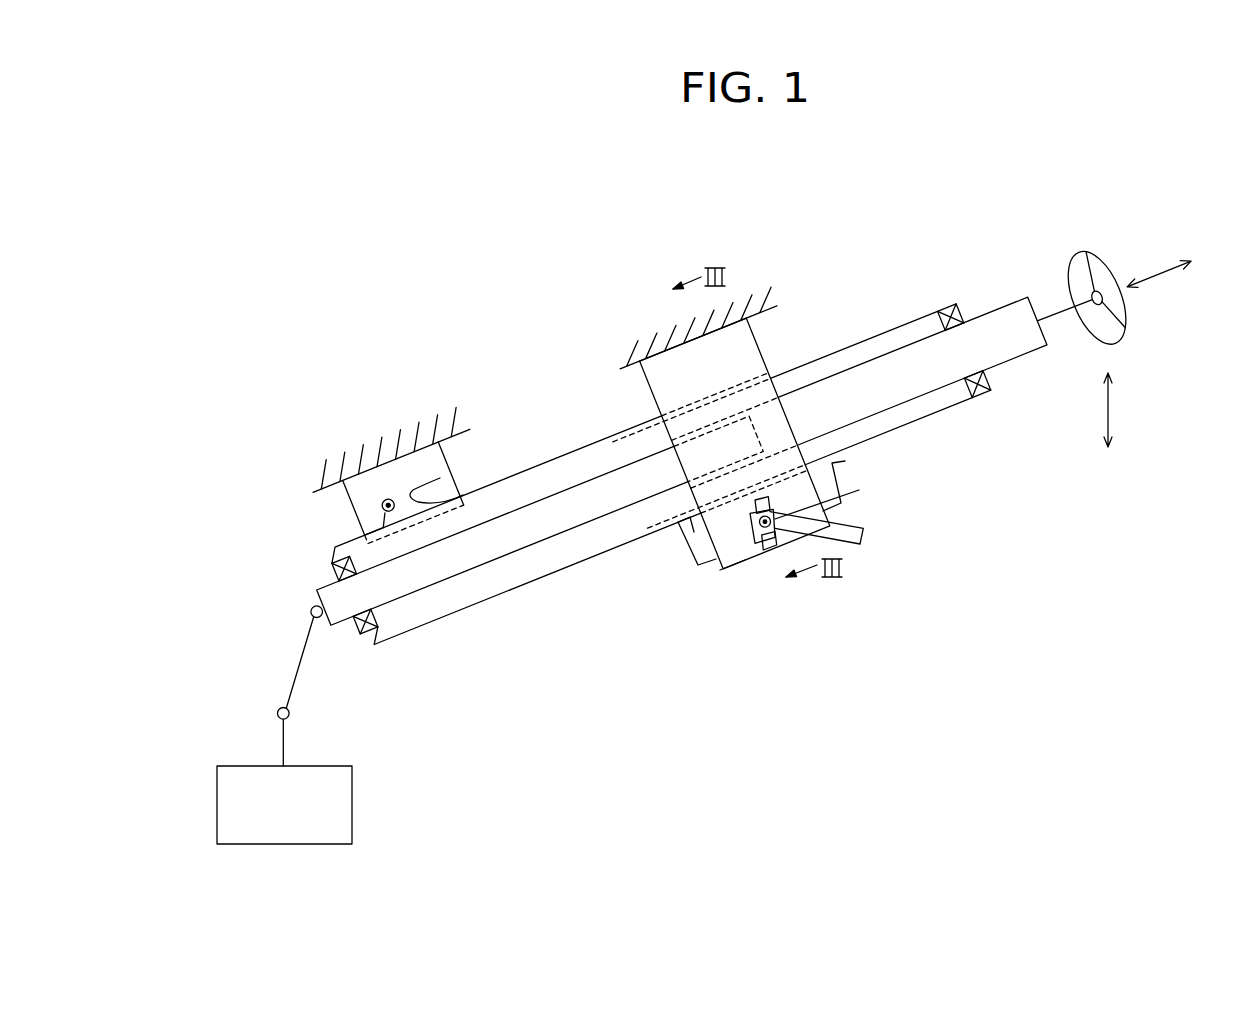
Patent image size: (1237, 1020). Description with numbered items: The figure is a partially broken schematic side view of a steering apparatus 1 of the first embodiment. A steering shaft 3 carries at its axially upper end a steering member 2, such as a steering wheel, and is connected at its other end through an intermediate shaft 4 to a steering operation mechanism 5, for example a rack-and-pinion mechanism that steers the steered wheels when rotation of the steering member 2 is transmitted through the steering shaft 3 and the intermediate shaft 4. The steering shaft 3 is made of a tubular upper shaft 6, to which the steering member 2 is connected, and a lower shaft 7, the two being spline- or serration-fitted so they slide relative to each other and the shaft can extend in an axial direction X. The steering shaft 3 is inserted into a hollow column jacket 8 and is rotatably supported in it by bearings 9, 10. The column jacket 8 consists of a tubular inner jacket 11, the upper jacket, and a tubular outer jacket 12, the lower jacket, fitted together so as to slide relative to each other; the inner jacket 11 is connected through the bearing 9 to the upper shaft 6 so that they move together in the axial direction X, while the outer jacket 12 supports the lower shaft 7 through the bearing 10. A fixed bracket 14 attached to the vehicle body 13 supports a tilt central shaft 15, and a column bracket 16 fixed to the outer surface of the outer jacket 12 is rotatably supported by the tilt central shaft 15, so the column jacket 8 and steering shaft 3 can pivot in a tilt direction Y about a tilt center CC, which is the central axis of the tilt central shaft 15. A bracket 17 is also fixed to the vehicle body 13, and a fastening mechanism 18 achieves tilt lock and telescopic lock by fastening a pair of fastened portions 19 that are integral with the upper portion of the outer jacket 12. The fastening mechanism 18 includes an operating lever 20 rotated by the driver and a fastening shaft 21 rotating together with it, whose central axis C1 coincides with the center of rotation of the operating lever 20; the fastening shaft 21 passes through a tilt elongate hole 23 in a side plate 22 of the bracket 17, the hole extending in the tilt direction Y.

The steering apparatus 1 is at (705, 523).
The steering member 2 is at (1085, 253).
The steering shaft 3 is at (705, 457).
The intermediate shaft 4 is at (300, 661).
The steering operation mechanism 5 is at (354, 789).
The upper shaft 6 is at (1021, 366).
The lower shaft 7 is at (441, 583).
The column jacket 8 is at (659, 458).
The bearing 9 is at (981, 398).
The bearing 10 is at (360, 635).
The inner jacket 11 is at (838, 352).
The outer jacket 12 is at (557, 456).
The vehicle body 13 is at (432, 430).
The fixed bracket 14 is at (443, 453).
The tilt central shaft 15 is at (381, 506).
The column bracket 16 is at (440, 478).
The bracket 17 is at (644, 380).
The fastening mechanism 18 is at (835, 556).
The fastened portions 19 is at (688, 544).
The operating lever 20 is at (866, 537).
The fastening shaft 21 is at (752, 541).
The side plate 22 is at (718, 575).
The tilt elongate hole 23 is at (768, 560).
The tilt center CC is at (388, 498).
The central axis of the fastening shaft C1 is at (832, 497).
The axial direction X is at (1158, 279).
The tilt direction Y is at (1116, 409).